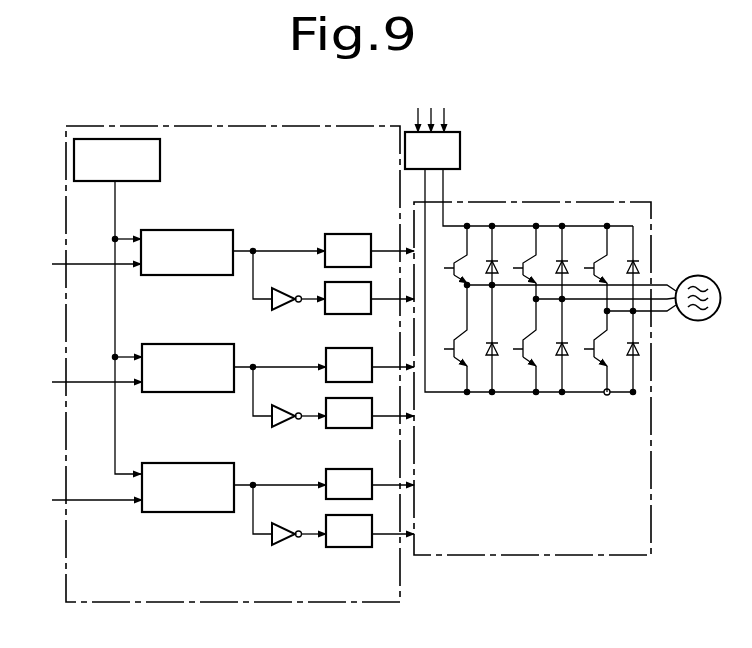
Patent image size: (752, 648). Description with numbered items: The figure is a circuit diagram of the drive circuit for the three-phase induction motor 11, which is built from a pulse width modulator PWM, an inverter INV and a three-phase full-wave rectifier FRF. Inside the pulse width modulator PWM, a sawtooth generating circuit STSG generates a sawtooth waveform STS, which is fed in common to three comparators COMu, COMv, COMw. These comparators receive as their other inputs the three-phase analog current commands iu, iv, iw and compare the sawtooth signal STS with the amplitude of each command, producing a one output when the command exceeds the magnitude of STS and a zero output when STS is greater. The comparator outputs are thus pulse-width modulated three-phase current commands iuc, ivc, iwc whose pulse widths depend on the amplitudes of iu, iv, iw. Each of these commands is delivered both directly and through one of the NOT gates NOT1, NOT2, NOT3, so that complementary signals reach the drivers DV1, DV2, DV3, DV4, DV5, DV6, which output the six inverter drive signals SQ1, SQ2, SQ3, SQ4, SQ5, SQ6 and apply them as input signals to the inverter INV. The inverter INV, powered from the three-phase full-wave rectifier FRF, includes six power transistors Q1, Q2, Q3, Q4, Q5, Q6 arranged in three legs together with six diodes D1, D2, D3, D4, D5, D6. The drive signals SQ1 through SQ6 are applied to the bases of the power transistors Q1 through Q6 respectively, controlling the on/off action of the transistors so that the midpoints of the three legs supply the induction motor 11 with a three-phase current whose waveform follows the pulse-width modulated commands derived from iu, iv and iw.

The pulse width modulator PWM is at (252, 602).
The sawtooth generating circuit STSG is at (160, 158).
The sawtooth waveform STS is at (129, 327).
The comparator COMu is at (190, 275).
The comparator COMv is at (190, 392).
The comparator COMw is at (190, 512).
The U-phase analog current command iu is at (85, 264).
The V-phase analog current command iv is at (86, 382).
The W-phase analog current command iw is at (85, 500).
The pulse-width modulated U-phase current command iuc is at (279, 243).
The pulse-width modulated V-phase current command ivc is at (280, 359).
The pulse-width modulated W-phase current command iwc is at (280, 477).
The NOT gate NOT1 is at (286, 288).
The NOT gate NOT2 is at (286, 405).
The NOT gate NOT3 is at (286, 523).
The driver DV1 is at (348, 250).
The driver DV2 is at (348, 298).
The driver DV3 is at (349, 365).
The driver DV4 is at (349, 413).
The driver DV5 is at (349, 484).
The driver DV6 is at (349, 531).
The inverter drive signal SQ1 is at (392, 242).
The inverter drive signal SQ2 is at (392, 290).
The inverter drive signal SQ3 is at (393, 358).
The inverter drive signal SQ4 is at (393, 407).
The inverter drive signal SQ5 is at (393, 476).
The inverter drive signal SQ6 is at (393, 525).
The three-phase full-wave rectifier FRF is at (460, 153).
The inverter INV is at (617, 202).
The power transistor Q1 is at (452, 255).
The power transistor Q2 is at (452, 338).
The power transistor Q3 is at (521, 262).
The power transistor Q4 is at (521, 345).
The power transistor Q5 is at (592, 268).
The power transistor Q6 is at (592, 351).
The diode D1 is at (502, 257).
The diode D2 is at (502, 338).
The diode D3 is at (571, 262).
The diode D4 is at (571, 345).
The diode D5 is at (649, 268).
The diode D6 is at (626, 351).
The three-phase induction motor 11 is at (699, 275).